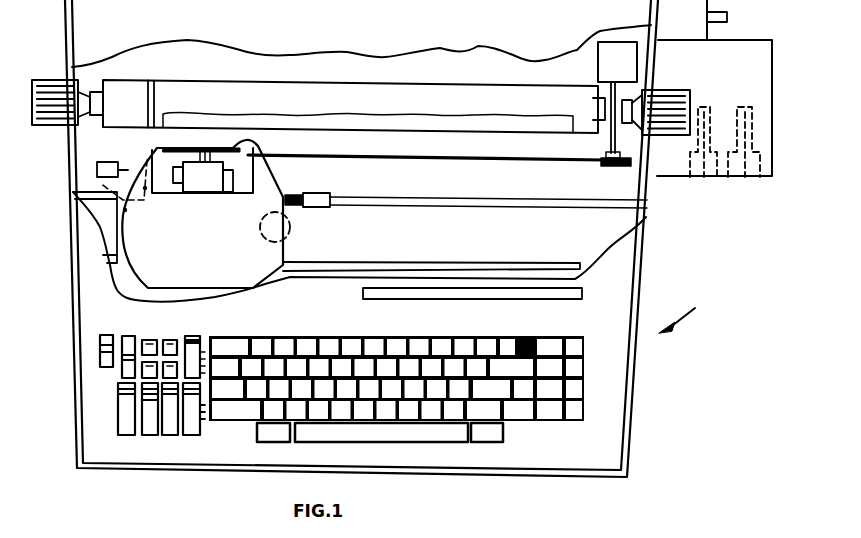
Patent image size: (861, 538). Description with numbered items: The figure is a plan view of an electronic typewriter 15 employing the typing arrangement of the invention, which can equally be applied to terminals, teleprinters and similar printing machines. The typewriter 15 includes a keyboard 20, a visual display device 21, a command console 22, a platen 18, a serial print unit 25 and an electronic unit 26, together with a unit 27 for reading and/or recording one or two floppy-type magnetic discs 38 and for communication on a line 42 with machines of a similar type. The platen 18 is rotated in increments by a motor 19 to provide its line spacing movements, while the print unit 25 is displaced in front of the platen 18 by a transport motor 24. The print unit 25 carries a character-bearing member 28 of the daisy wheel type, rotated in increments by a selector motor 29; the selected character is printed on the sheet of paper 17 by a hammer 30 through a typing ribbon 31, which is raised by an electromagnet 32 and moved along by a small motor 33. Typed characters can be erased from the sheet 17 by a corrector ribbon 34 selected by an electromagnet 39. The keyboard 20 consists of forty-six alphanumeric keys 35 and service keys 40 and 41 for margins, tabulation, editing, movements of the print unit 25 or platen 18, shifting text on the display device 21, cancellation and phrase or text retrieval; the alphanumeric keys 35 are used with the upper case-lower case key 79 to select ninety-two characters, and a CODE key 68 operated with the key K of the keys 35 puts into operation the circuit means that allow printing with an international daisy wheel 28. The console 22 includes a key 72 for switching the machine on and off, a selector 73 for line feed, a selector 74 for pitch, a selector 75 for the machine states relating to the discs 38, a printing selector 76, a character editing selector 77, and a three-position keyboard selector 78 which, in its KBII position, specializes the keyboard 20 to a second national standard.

The electronic typewriter 15 is at (397, 238).
The sheet of paper 17 is at (379, 126).
The platen 18 is at (441, 99).
The motor 19 is at (128, 107).
The keyboard 20 is at (386, 329).
The visual display device 21 is at (585, 295).
The command console 22 is at (120, 329).
The transport motor 24 is at (625, 62).
The serial print unit 25 is at (287, 178).
The electronic unit 26 is at (578, 277).
The unit for reading and/or recording magnetic discs 27 is at (670, 165).
The character-bearing member 28 is at (237, 148).
The selector motor 29 is at (180, 173).
The hammer 30 is at (206, 187).
The typing ribbon 31 is at (138, 154).
The electromagnet 32 is at (318, 201).
The small motor 33 is at (290, 231).
The corrector ribbon 34 is at (78, 177).
The alphanumeric keys 35 is at (403, 394).
The magnetic discs 38 is at (748, 168).
The electromagnet 39 is at (108, 164).
The service keys 40 is at (169, 340).
The service keys 41 is at (554, 337).
The line 42 is at (727, 17).
The CODE key 68 is at (232, 345).
The key for switching the machine on and off 72 is at (107, 370).
The selector 73 is at (146, 428).
The selector 74 is at (125, 423).
The selector 75 is at (172, 430).
The printing selector 76 is at (201, 433).
The character editing selector 77 is at (127, 340).
The keyboard selector 78 is at (195, 336).
The upper case-lower case key 79 is at (245, 420).